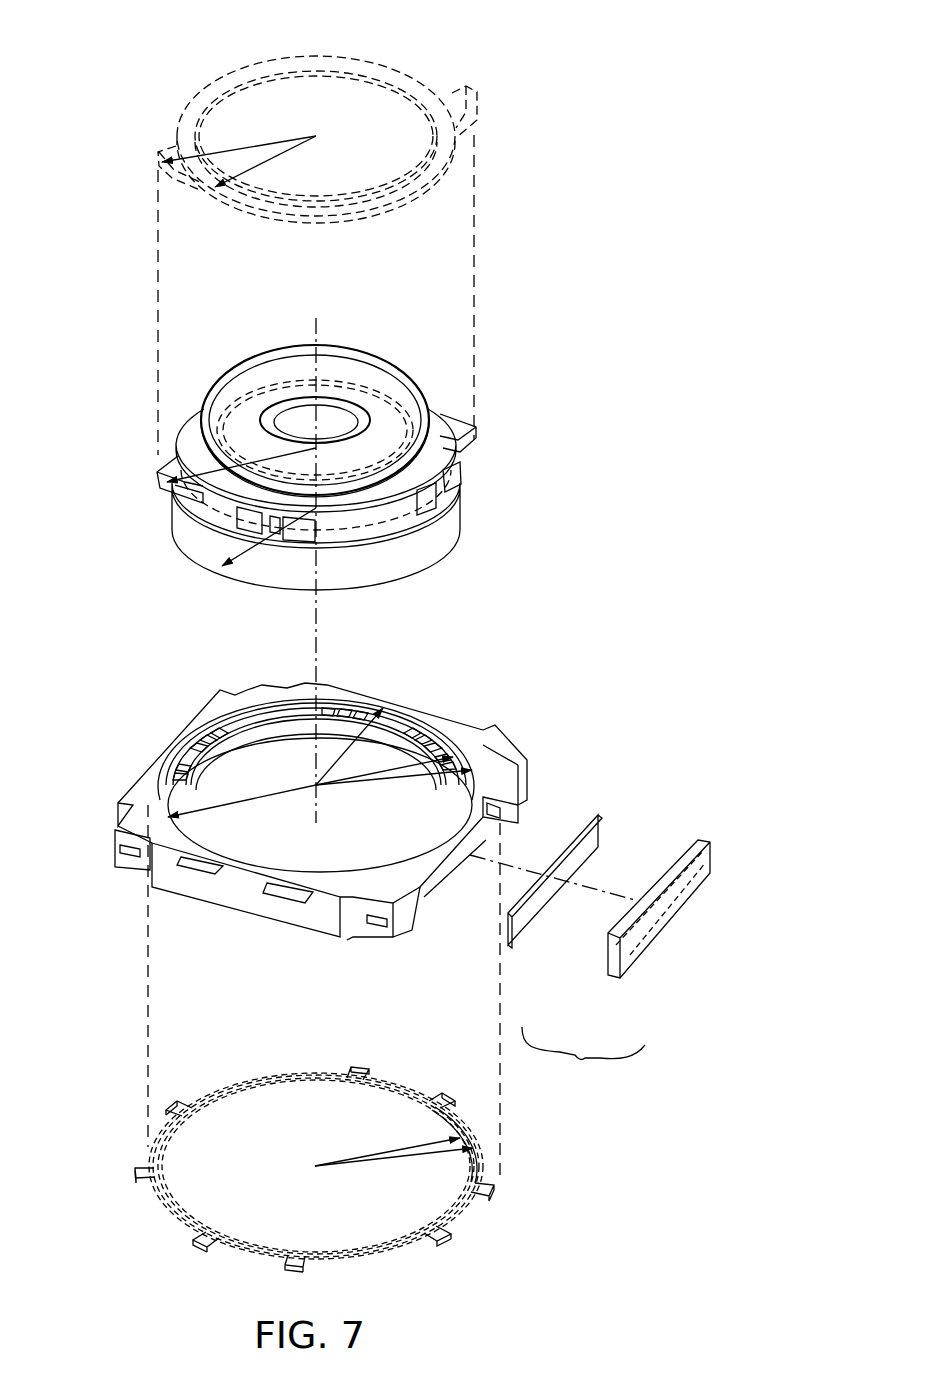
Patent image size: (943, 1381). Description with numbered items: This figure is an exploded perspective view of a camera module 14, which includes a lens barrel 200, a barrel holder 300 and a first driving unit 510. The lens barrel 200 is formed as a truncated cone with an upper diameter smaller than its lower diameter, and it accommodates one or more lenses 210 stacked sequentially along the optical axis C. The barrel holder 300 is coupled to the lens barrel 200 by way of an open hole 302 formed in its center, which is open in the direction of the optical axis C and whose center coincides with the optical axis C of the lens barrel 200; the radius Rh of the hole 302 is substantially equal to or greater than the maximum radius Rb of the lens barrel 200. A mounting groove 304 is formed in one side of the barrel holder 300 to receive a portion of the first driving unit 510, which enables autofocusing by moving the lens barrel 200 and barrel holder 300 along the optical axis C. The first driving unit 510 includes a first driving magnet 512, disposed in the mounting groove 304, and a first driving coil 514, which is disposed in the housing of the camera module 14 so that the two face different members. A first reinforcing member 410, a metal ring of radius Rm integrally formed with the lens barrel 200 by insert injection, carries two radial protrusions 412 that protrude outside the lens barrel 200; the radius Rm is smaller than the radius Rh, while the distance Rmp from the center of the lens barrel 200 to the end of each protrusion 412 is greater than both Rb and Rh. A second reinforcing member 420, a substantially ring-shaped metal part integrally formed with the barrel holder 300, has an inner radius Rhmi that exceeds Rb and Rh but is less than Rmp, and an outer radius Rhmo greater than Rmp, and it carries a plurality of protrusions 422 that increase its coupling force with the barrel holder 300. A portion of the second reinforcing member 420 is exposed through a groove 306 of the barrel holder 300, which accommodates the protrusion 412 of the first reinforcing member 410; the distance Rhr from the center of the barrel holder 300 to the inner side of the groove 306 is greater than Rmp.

The camera module 14 is at (522, 418).
The lens barrel 200 is at (437, 525).
The lenses 210 is at (333, 413).
The barrel holder 300 is at (510, 752).
The hole 302 is at (258, 715).
The mounting groove 304 is at (516, 812).
The groove 306 is at (160, 778).
The first reinforcing member 410 is at (180, 117).
The protrusions 412 is at (466, 105).
The second reinforcing member 420 is at (300, 1077).
The protrusions 422 is at (453, 1225).
The first driving unit 510 is at (583, 1059).
The first driving magnet 512 is at (533, 912).
The first driving coil 514 is at (628, 957).
The optical axis C is at (316, 557).
The radius of the first reinforcing member Rm is at (288, 153).
The distance to the end of the protrusion Rmp is at (243, 143).
The maximum radius of the lens barrel Rb is at (213, 543).
The radius of the hole Rh is at (345, 752).
The distance to the inner side of the groove Rhr is at (226, 786).
The inner radius of the second reinforcing member Rhmi is at (402, 765).
The outer radius of the second reinforcing member Rhmo is at (465, 772).